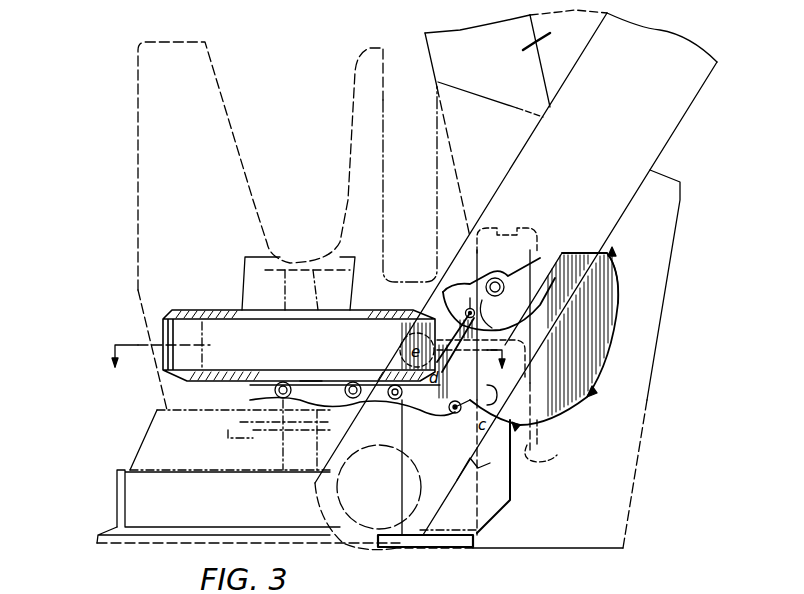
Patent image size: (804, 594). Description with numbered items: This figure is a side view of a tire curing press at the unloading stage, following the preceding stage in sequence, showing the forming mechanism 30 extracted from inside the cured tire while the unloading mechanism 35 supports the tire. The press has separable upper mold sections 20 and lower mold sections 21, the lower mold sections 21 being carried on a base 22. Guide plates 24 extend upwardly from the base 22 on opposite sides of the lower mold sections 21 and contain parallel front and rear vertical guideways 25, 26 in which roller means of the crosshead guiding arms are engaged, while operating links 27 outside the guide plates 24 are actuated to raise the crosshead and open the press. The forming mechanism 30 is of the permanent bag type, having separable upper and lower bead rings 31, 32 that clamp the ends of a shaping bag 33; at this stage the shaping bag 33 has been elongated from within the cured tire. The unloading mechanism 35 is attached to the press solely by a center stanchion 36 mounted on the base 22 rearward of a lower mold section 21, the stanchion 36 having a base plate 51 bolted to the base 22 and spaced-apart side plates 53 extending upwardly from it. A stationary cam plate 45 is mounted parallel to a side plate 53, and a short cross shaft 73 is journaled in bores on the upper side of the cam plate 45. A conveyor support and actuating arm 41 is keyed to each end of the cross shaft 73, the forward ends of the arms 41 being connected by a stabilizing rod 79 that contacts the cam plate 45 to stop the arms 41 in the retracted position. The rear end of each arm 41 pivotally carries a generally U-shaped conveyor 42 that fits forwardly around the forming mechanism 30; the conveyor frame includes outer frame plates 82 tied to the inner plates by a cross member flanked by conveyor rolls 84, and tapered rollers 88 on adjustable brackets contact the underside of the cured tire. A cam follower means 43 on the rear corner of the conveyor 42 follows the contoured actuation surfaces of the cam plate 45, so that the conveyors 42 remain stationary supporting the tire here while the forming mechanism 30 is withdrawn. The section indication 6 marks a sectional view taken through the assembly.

The upper mold sections 20 is at (563, 17).
The lower mold sections 21 is at (145, 483).
The base 22 is at (157, 533).
The guide plates 24 is at (598, 482).
The front vertical guideway 25 is at (383, 193).
The rear vertical guideway 26 is at (540, 462).
The operating links 27 is at (635, 135).
The forming mechanism 30 is at (240, 393).
The upper bead ring 31 is at (247, 263).
The lower bead ring 32 is at (250, 442).
The shaping bag 33 is at (277, 290).
The unloading mechanism 35 is at (610, 362).
The stanchion 36 is at (458, 517).
The conveyor support and actuating arm 41 is at (453, 313).
The conveyor 42 is at (310, 381).
The cam follower means 43 is at (448, 414).
The cam plate 45 is at (622, 313).
The base plate 51 is at (427, 543).
The side plates 53 is at (410, 488).
The cross shaft 73 is at (471, 307).
The stabilizing rod 79 is at (541, 256).
The outer frame plates 82 is at (377, 417).
The conveyor rolls 84 is at (499, 388).
The tapered rollers 88 is at (268, 393).
The section line 6 is at (301, 359).